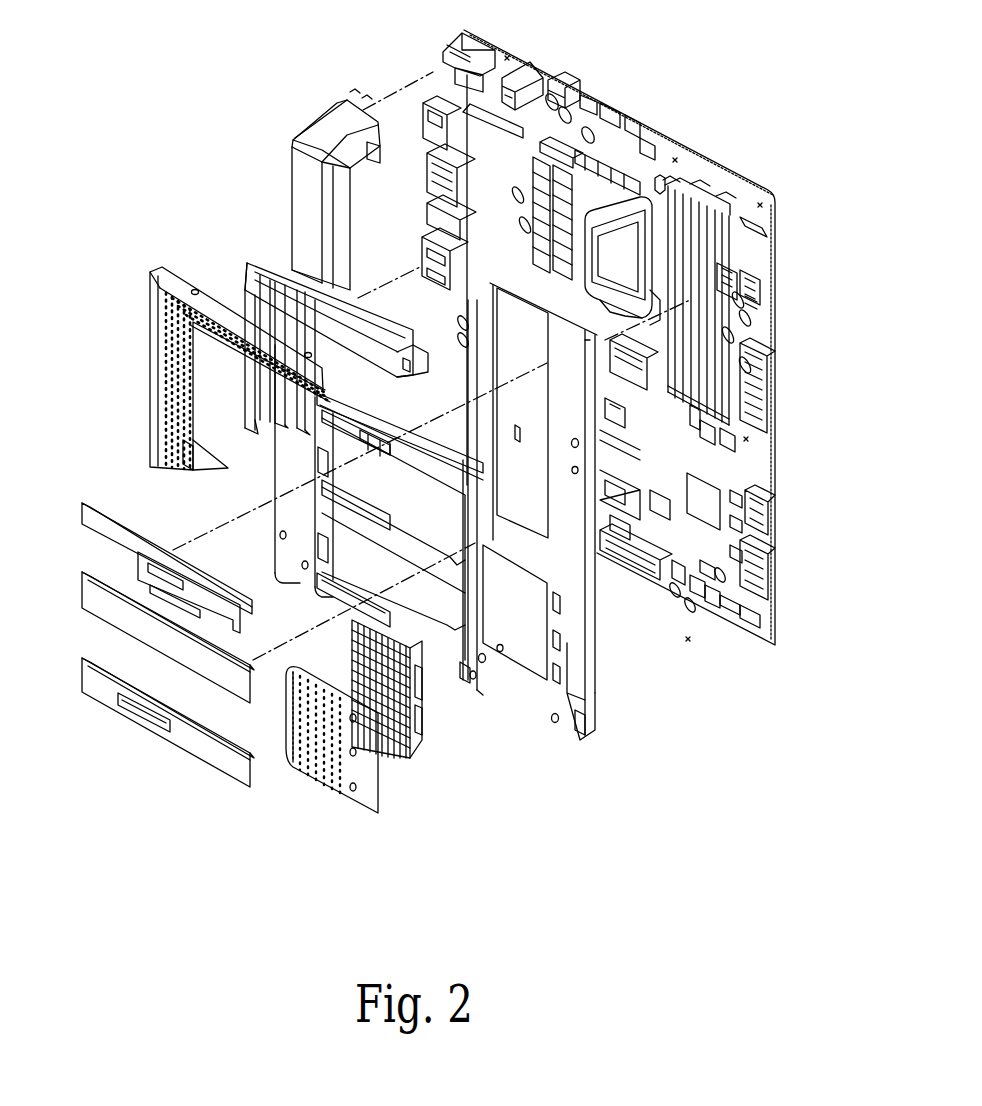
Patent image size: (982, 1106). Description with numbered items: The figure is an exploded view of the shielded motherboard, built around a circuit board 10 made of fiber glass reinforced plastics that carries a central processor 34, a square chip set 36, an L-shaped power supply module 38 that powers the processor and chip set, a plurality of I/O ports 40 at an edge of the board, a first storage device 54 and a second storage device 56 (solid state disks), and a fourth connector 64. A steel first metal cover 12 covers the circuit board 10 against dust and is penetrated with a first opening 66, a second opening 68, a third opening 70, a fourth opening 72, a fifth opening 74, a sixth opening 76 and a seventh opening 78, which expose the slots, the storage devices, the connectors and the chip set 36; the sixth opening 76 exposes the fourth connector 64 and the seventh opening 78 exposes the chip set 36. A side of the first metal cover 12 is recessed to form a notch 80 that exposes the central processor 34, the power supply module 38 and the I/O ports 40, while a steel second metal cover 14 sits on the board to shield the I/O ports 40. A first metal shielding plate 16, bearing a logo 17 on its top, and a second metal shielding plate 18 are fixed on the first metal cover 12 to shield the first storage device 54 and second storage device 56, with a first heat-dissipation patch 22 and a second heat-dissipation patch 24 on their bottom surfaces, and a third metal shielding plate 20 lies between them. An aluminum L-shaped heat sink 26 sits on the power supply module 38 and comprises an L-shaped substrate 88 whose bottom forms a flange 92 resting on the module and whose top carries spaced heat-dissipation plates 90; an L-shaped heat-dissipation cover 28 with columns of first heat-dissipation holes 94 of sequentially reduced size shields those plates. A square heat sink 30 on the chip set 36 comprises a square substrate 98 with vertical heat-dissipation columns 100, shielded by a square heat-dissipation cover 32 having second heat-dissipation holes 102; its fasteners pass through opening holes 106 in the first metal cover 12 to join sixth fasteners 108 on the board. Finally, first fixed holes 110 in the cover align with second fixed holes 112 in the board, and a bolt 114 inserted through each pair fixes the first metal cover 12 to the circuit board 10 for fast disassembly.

The circuit board 10 is at (720, 183).
The first metal cover 12 is at (568, 552).
The second metal cover 14 is at (305, 184).
The first metal shielding plate 16 is at (161, 543).
The logo 17 is at (160, 557).
The second metal shielding plate 18 is at (97, 603).
The third metal shielding plate 20 is at (164, 737).
The first heat-dissipation patch 22 is at (157, 556).
The second heat-dissipation patch 24 is at (148, 717).
The L-shaped heat sink 26 is at (328, 336).
The L-shaped heat-dissipation cover 28 is at (217, 392).
The square heat sink 30 is at (417, 707).
The square heat-dissipation cover 32 is at (364, 759).
The central processor 34 is at (607, 260).
The chip set 36 is at (710, 500).
The power supply module 38 is at (596, 170).
The Input/Output (I/O) ports 40 is at (421, 143).
The first storage device 54 is at (623, 362).
The second storage device 56 is at (620, 533).
The fourth connector 64 is at (757, 383).
The first opening 66 is at (332, 433).
The second opening 68 is at (370, 553).
The third opening 70 is at (323, 490).
The fourth opening 72 is at (343, 592).
The fifth opening 74 is at (513, 403).
The sixth opening 76 is at (650, 440).
The seventh opening 78 is at (563, 605).
The notch 80 is at (378, 250).
The L-shaped substrate 88 is at (262, 263).
The heat-dissipation plates 90 is at (250, 290).
The flange 92 is at (410, 343).
The first heat-dissipation holes 94 is at (187, 467).
The square substrate 98 is at (422, 690).
The heat-dissipation columns 100 is at (432, 749).
The second heat-dissipation holes 102 is at (313, 780).
The opening holes 106 is at (540, 618).
The sixth fasteners 108 is at (753, 513).
The first fixed holes 110 is at (490, 677).
The second fixed holes 112 is at (683, 590).
The bolt 114 is at (500, 646).